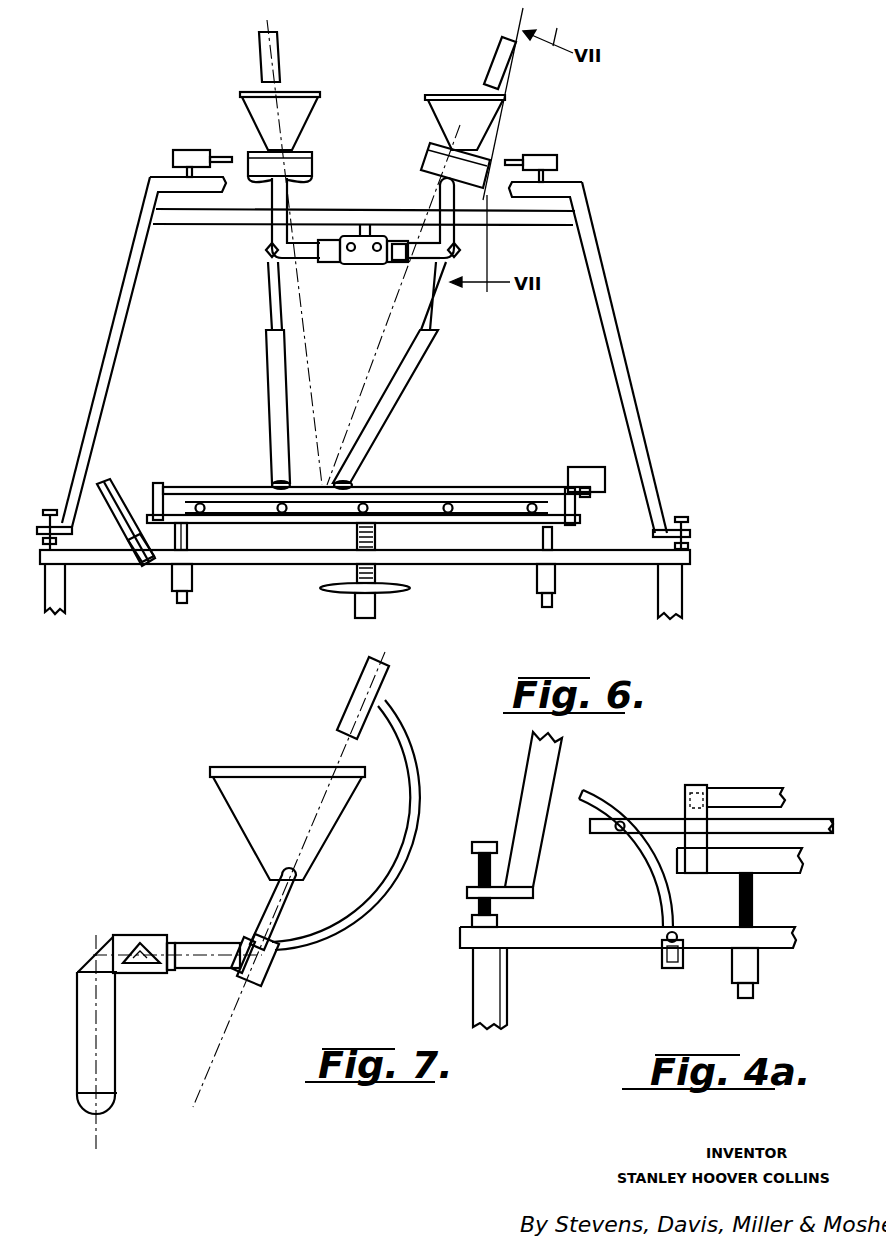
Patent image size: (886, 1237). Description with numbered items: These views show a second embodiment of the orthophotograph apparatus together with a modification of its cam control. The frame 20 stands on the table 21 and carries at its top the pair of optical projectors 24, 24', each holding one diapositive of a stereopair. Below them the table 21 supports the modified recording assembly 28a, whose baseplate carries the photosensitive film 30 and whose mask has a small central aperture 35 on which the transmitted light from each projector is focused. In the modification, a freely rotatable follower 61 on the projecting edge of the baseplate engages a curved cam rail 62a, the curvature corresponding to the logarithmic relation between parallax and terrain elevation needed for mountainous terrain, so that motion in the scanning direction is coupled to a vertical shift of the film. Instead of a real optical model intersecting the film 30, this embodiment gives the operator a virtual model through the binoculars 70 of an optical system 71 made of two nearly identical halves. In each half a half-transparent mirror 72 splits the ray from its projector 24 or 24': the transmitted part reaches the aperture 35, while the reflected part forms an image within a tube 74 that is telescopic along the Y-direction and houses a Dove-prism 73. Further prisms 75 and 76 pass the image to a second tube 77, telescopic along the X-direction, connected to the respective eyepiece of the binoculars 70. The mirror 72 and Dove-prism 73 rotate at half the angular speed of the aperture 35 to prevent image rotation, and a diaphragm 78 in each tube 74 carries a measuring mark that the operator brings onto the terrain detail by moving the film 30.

In FIG. 6, the frame 20 is at (597, 265).
In FIG. 4A, the table 21 is at (618, 949).
In FIG. 6, the optical projector 24 is at (311, 107).
In FIG. 6, the optical projector 24' is at (468, 112).
In FIG. 7, the optical projector 24' is at (283, 879).
In FIG. 6, the modified recording assembly 28a is at (467, 483).
In FIG. 6, the photosensitive layer or film 30 is at (247, 487).
In FIG. 6, the aperture 35 is at (336, 484).
In FIG. 4A, the follower 61 is at (621, 835).
In FIG. 4A, the curved cam rail 62a is at (603, 797).
In FIG. 6, the binoculars 70 is at (352, 252).
In FIG. 6, the optical system 71 is at (278, 270).
In FIG. 7, the optical system 71 is at (137, 922).
In FIG. 7, the half-transparent mirror 72 is at (267, 973).
In FIG. 7, the Dove-prism 73 is at (140, 964).
In FIG. 7, the tube 74 is at (183, 940).
In FIG. 7, the prism 75 is at (93, 950).
In FIG. 6, the prism 76 is at (450, 263).
In FIG. 7, the prism 76 is at (104, 1102).
In FIG. 6, the second tube 77 is at (397, 247).
In FIG. 7, the diaphragm 78 is at (173, 970).